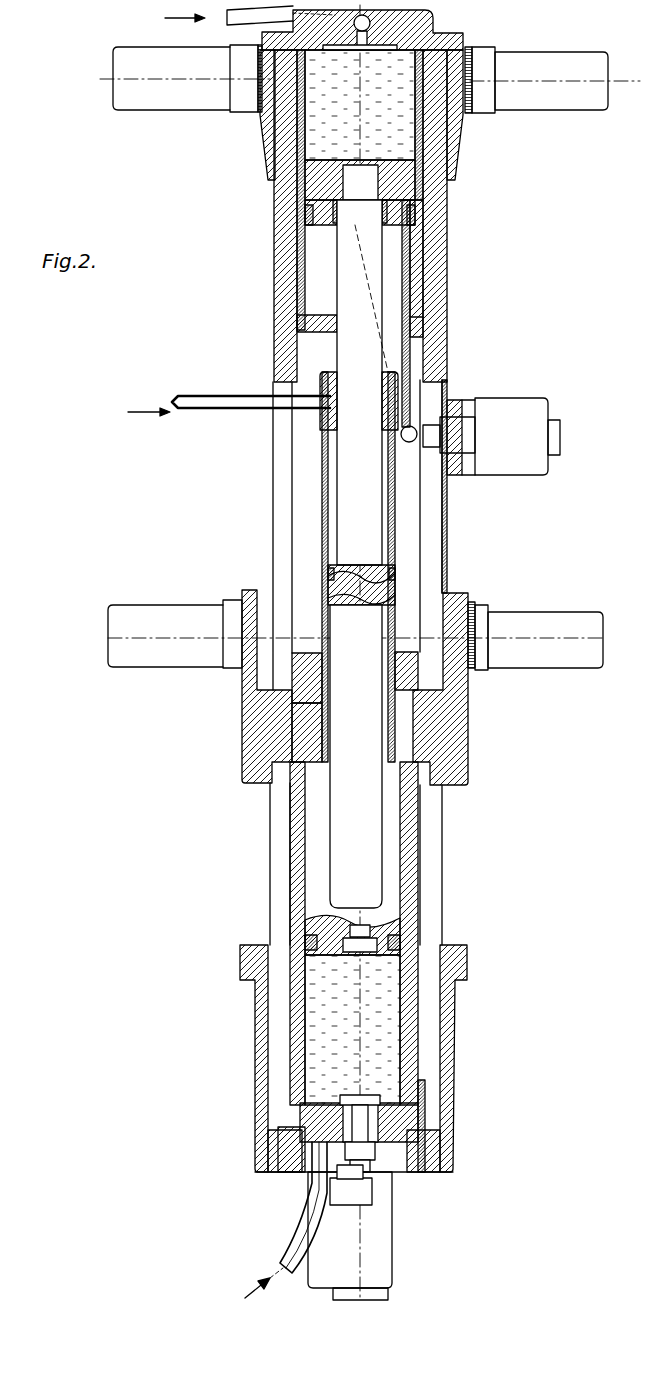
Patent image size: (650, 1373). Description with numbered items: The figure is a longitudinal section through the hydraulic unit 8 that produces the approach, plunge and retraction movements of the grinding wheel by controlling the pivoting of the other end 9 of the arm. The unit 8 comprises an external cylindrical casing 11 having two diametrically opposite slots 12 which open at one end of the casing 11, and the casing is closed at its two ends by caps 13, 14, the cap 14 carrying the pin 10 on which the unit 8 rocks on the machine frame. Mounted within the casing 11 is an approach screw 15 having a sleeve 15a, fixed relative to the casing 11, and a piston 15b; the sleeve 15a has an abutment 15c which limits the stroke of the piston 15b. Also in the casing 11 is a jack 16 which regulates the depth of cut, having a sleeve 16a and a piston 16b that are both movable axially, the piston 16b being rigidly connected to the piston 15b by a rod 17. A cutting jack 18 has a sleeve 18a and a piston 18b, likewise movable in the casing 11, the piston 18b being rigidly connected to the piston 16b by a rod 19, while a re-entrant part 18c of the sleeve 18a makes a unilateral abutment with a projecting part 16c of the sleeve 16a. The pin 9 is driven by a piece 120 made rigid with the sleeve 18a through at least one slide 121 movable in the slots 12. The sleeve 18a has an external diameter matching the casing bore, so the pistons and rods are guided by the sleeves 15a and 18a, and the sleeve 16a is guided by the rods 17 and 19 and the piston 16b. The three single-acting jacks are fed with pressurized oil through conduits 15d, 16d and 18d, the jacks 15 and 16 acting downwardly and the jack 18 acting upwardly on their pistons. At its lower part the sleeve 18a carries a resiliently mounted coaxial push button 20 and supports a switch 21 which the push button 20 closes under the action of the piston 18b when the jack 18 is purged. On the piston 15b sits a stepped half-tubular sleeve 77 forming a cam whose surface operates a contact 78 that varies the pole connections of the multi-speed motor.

The hydraulic unit 8 is at (532, 264).
The other end of the arm 9 is at (553, 618).
The rocking mount pin 10 is at (522, 62).
The external cylindrical casing 11 is at (438, 125).
The slots 12 is at (283, 537).
The cap 13 is at (445, 1050).
The cap 14 is at (398, 18).
The approach screw 15 is at (325, 135).
The sleeve 15a is at (300, 187).
The piston 15b is at (310, 208).
The abutment 15c is at (320, 317).
The conduit 15d is at (238, 13).
The jack 16 is at (335, 440).
The sleeve 16a is at (325, 470).
The piston 16b is at (322, 585).
The projecting part 16c is at (312, 732).
The conduit 16d is at (197, 397).
The rod 17 is at (348, 347).
The cutting jack 18 is at (318, 1058).
The sleeve 18a is at (302, 1000).
The piston 18b is at (330, 917).
The re-entrant part 18c is at (313, 725).
The conduit 18d is at (288, 1247).
The rod 19 is at (343, 820).
The push button 20 is at (353, 1113).
The switch 21 is at (372, 1250).
The stepped half-tubular sleeve 77 is at (405, 297).
The contact 78 is at (535, 402).
The piece 120 is at (468, 718).
The slide 121 is at (438, 756).